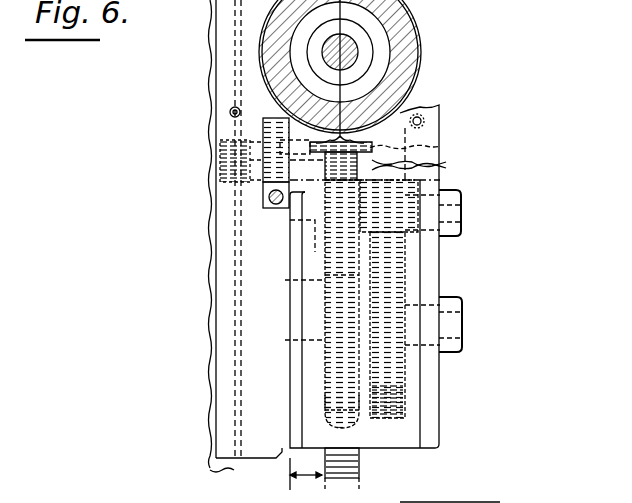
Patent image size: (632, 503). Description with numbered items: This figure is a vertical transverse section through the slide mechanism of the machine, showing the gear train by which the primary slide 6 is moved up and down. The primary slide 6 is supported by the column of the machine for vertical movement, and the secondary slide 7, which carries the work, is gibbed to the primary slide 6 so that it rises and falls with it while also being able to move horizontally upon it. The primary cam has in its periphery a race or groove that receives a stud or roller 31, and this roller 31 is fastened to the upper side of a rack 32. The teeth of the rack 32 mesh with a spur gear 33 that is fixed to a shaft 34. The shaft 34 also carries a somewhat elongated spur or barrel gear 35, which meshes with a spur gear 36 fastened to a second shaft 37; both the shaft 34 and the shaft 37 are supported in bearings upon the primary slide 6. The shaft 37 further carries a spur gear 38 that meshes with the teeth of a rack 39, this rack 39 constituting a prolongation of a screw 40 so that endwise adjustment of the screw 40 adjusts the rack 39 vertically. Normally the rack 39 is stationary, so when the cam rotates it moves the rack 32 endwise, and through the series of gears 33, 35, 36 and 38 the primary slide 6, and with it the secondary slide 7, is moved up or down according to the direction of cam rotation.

The primary slide 6 is at (410, 428).
The secondary slide 7 is at (472, 502).
The stud or roller 31 is at (405, 118).
The rack 32 is at (365, 146).
The spur gear 33 is at (365, 168).
The shaft 34 is at (462, 214).
The elongated spur or barrel gear 35 is at (420, 245).
The spur gear 36 is at (400, 272).
The shaft 37 is at (462, 330).
The spur gear 38 is at (325, 347).
The rack 39 is at (325, 414).
The screw 40 is at (358, 478).